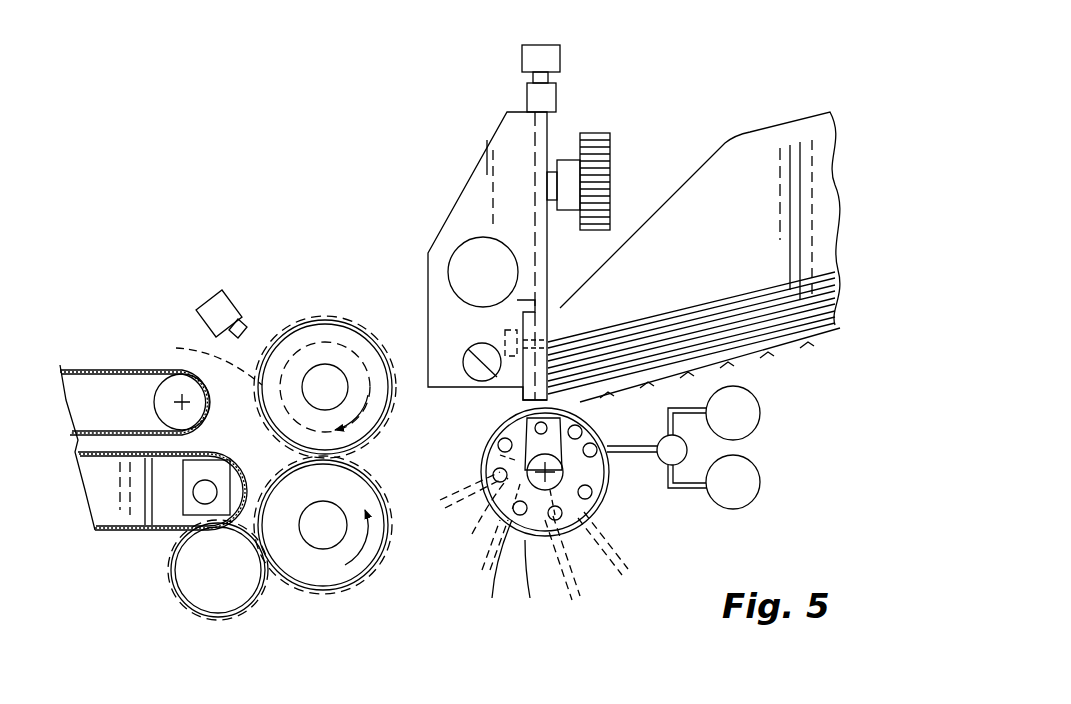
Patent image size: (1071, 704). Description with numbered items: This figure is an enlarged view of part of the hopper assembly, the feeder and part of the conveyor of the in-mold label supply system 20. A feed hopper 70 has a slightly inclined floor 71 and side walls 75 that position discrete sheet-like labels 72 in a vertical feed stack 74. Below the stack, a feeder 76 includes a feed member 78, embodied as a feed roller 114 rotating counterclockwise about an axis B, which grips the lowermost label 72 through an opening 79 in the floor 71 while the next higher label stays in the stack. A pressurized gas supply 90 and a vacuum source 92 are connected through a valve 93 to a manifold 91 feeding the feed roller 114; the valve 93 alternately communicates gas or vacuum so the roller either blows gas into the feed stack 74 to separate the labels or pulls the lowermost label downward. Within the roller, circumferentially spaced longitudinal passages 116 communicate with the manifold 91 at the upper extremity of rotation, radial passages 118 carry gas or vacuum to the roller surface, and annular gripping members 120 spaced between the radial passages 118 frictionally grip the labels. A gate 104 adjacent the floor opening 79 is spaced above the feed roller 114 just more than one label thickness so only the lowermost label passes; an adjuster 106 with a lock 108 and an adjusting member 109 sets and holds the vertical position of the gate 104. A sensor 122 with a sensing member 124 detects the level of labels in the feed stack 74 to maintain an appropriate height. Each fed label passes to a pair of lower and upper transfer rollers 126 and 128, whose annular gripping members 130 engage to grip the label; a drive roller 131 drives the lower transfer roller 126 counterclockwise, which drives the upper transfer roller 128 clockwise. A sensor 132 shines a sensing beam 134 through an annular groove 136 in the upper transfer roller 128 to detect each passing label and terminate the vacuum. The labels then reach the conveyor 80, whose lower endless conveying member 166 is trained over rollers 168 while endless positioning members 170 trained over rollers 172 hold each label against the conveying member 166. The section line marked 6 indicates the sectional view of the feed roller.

The in-mold label supply system 20 is at (292, 118).
The adjusting member 109 is at (560, 60).
The adjuster 106 is at (605, 98).
The lock 108 is at (610, 160).
The sensor 122 is at (500, 332).
The gate 104 is at (470, 355).
The sensing member 124 is at (548, 345).
The side walls 75 is at (745, 168).
The feed stack 74 is at (805, 262).
The labels 72 is at (815, 312).
The floor 71 is at (636, 398).
The opening 79 is at (618, 336).
The feed hopper 70 is at (832, 338).
The feed member 78 is at (598, 522).
The feeder 76 is at (610, 546).
The axis B is at (605, 488).
The valve 93 is at (658, 468).
The pressurized gas supply 90 is at (760, 423).
The vacuum source 92 is at (755, 500).
The section line 6 is at (470, 408).
The radial passages 118 is at (526, 531).
The annular gripping members 120 is at (475, 508).
The longitudinal passages 116 is at (520, 572).
The manifold 91 is at (490, 566).
The feed roller 114 is at (528, 576).
The upper transfer roller 128 is at (336, 322).
The annular groove 136 is at (355, 334).
The annular gripping members 130 is at (300, 330).
The sensing beam 134 is at (204, 355).
The sensor 132 is at (222, 305).
The lower transfer roller 126 is at (370, 578).
The drive roller 131 is at (212, 618).
The endless positioning members 170 is at (118, 368).
The rollers 172 is at (160, 400).
The lower endless conveying member 166 is at (62, 445).
The rollers 168 is at (200, 543).
The conveyor 80 is at (100, 568).